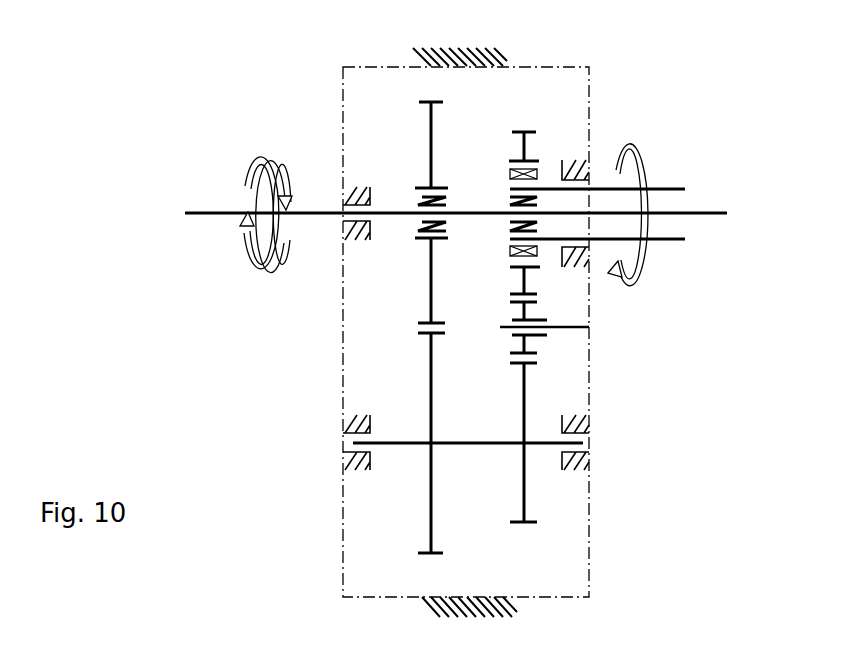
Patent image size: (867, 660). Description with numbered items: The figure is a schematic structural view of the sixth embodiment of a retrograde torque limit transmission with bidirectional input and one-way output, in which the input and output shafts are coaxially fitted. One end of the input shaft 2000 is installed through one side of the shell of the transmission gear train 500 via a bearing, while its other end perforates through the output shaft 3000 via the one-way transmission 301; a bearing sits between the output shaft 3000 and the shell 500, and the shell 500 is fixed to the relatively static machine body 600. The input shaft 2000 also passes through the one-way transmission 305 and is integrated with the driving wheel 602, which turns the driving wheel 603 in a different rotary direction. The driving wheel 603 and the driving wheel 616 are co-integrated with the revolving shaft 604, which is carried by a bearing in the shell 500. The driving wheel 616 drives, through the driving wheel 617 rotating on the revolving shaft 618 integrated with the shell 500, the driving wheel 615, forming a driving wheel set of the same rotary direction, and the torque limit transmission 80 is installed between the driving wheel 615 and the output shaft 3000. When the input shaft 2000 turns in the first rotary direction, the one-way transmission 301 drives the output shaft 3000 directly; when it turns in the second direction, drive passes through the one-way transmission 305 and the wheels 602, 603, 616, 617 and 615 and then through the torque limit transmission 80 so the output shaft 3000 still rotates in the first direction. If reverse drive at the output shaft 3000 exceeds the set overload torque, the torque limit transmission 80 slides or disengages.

The shell of the transmission gear train 500 is at (343, 130).
The machine body 600 is at (490, 60).
The input shaft 2000 is at (233, 213).
The output shaft 3000 is at (655, 189).
The driving wheel 602 is at (431, 135).
The one-way transmission 305 is at (418, 233).
The driving wheel 603 is at (431, 413).
The driving wheel 615 is at (530, 130).
The torque limit transmission 80 is at (510, 175).
The one-way transmission 301 is at (510, 233).
The revolving shaft 618 is at (563, 330).
The driving wheel 617 is at (514, 353).
The driving wheel 616 is at (524, 530).
The revolving shaft 604 is at (562, 445).